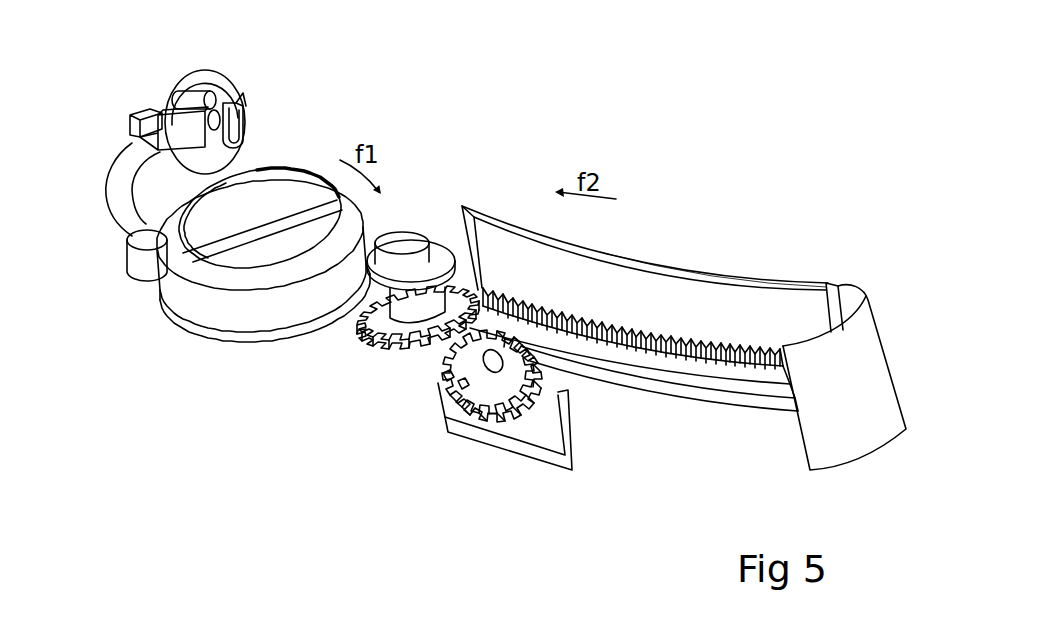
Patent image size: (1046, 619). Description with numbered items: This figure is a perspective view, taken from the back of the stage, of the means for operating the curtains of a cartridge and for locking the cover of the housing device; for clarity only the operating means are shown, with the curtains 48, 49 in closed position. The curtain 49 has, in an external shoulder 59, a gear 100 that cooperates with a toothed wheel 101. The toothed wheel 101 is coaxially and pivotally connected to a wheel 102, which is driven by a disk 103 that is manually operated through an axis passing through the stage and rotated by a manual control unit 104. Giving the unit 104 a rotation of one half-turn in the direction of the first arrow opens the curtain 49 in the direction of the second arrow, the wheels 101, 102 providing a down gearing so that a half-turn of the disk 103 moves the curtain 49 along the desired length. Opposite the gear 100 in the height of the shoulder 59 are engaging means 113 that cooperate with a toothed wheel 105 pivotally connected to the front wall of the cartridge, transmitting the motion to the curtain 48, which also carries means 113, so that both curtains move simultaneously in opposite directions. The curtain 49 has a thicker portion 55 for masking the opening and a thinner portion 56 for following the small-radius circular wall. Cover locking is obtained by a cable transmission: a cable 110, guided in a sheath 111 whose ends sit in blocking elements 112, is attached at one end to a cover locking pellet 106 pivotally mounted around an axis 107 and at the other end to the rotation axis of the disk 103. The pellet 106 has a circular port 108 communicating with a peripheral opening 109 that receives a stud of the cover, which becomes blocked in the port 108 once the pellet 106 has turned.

The curtain 48 is at (463, 423).
The curtain 49 is at (660, 297).
The thicker portion 55 is at (723, 277).
The thinner portion 56 is at (862, 293).
The external shoulder 59 is at (730, 375).
The gear 100 is at (653, 357).
The toothed wheel 101 is at (377, 343).
The wheel 102 is at (454, 246).
The disk 103 is at (217, 333).
The manual control unit 104 is at (267, 170).
The toothed wheel 105 is at (507, 395).
The cover locking pellet 106 is at (180, 85).
The axis 107 is at (222, 88).
The circular port 108 is at (230, 133).
The peripheral opening 109 is at (246, 92).
The cable 110 is at (185, 112).
The sheath 111 is at (117, 203).
The blocking elements 112 is at (167, 150).
The engaging means 113 is at (467, 388).